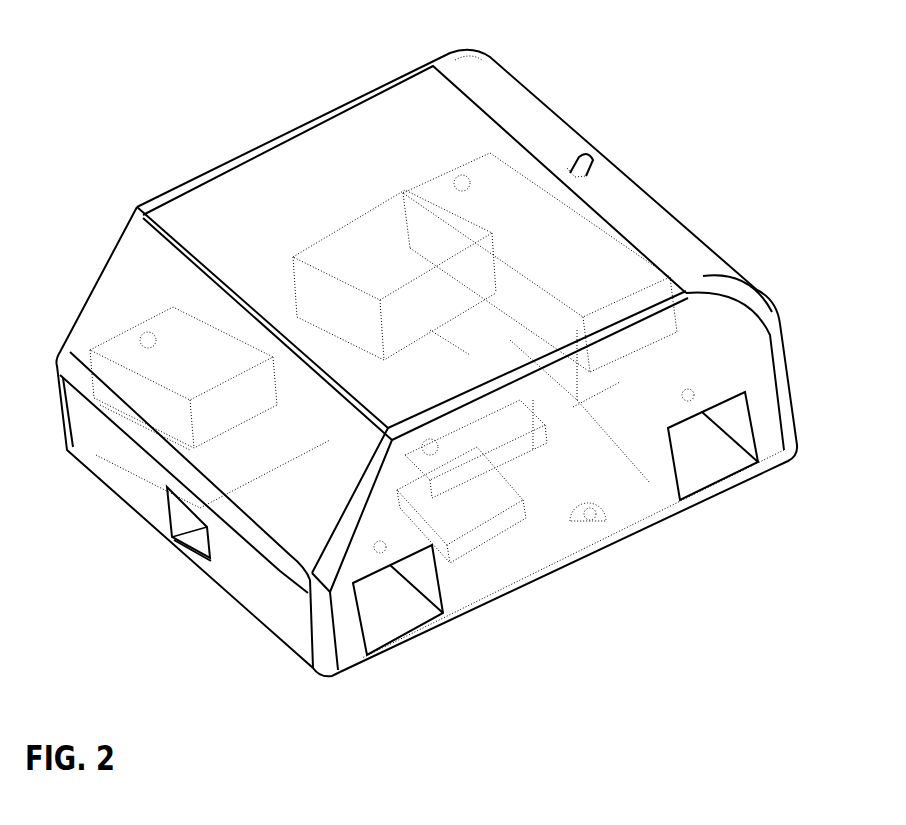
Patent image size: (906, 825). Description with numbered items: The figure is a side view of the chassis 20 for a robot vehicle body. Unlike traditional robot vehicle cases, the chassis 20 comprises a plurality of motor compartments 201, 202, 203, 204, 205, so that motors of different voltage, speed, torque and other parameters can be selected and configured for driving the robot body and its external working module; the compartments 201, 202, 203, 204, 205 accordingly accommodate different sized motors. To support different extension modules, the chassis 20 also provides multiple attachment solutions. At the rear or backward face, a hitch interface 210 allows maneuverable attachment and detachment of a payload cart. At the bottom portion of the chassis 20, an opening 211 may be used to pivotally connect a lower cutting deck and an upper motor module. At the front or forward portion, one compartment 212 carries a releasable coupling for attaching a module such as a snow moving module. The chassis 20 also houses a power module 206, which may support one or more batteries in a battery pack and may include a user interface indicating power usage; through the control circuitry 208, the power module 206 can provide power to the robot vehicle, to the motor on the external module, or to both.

The chassis 20 is at (222, 70).
The motor compartment 201 is at (398, 600).
The motor compartment 202 is at (713, 446).
The motor compartment 203 is at (540, 262).
The motor compartment 204 is at (183, 377).
The motor compartment 205 is at (394, 275).
The power module 206 is at (473, 550).
The control circuitry 208 is at (600, 530).
The hitch interface 210 is at (604, 151).
The opening 211 is at (476, 449).
The compartment 212 is at (170, 535).